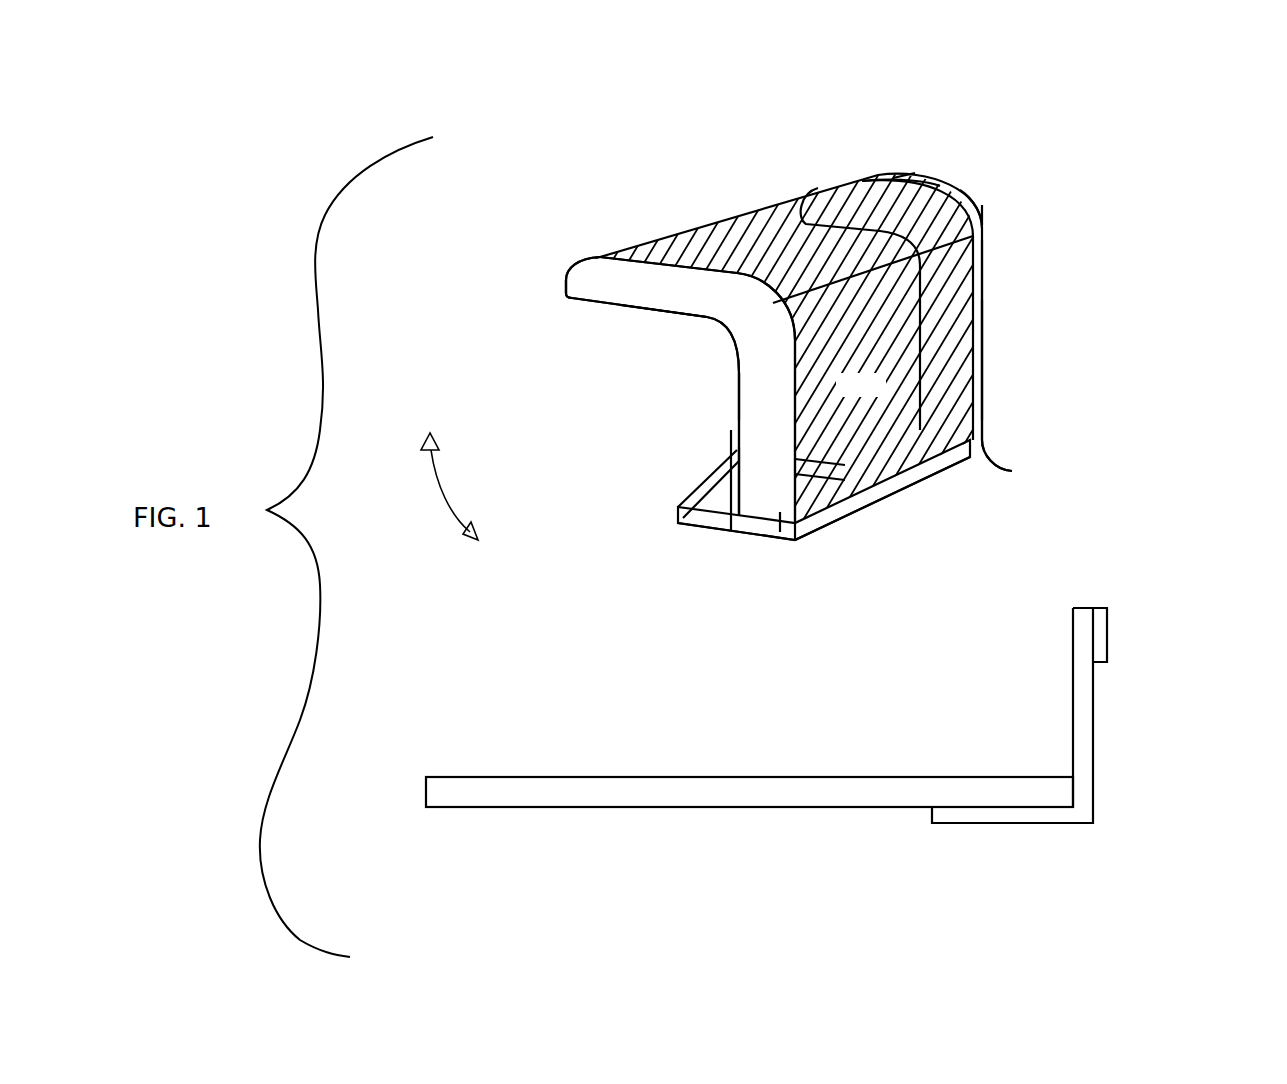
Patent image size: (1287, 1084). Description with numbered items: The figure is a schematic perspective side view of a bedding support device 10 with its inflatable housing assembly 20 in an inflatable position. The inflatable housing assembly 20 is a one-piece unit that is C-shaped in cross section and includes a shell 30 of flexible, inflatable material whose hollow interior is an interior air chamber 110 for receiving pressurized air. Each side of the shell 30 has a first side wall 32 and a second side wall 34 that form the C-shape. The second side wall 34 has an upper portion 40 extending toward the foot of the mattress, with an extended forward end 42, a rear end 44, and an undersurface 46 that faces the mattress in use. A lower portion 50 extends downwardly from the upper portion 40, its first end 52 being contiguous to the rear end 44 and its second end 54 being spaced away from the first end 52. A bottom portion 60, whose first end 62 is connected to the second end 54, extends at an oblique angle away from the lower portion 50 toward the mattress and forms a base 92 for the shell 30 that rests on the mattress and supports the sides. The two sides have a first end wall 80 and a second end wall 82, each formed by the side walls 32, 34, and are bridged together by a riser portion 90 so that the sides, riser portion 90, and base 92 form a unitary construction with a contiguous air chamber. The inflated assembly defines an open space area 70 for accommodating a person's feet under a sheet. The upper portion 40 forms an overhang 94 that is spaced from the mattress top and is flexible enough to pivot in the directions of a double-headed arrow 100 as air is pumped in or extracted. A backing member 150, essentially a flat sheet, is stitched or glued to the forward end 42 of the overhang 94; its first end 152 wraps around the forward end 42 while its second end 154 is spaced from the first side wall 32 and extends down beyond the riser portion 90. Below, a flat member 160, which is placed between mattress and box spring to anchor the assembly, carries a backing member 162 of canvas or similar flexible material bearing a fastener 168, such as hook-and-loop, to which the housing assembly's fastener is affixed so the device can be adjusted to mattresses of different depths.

The bedding support device 10 is at (772, 175).
The inflatable housing assembly 20 is at (1000, 187).
The shell 30 is at (859, 205).
The first side wall 32 is at (798, 542).
The second side wall 34 is at (737, 375).
The upper portion 40 is at (625, 285).
The forward end 42 is at (565, 282).
The rear end 44 is at (692, 287).
The undersurface 46 is at (640, 312).
The lower portion 50 is at (737, 400).
The first end 52 is at (737, 347).
The second end 54 is at (739, 447).
The bottom portion 60 is at (722, 490).
The first end 62 is at (731, 530).
The open space area 70 is at (737, 372).
The first end wall 80 is at (708, 500).
The second end wall 82 is at (990, 237).
The riser portion 90 is at (984, 303).
The base 92 is at (843, 510).
The overhang 94 is at (563, 300).
The double-headed arrow 100 is at (437, 497).
The interior air chamber 110 is at (861, 385).
The backing member 150 is at (984, 213).
The first end 152 is at (889, 178).
The second end 154 is at (1015, 471).
The flat member 160 is at (883, 808).
The backing member 162 is at (1112, 722).
The fastener 168 is at (1100, 642).